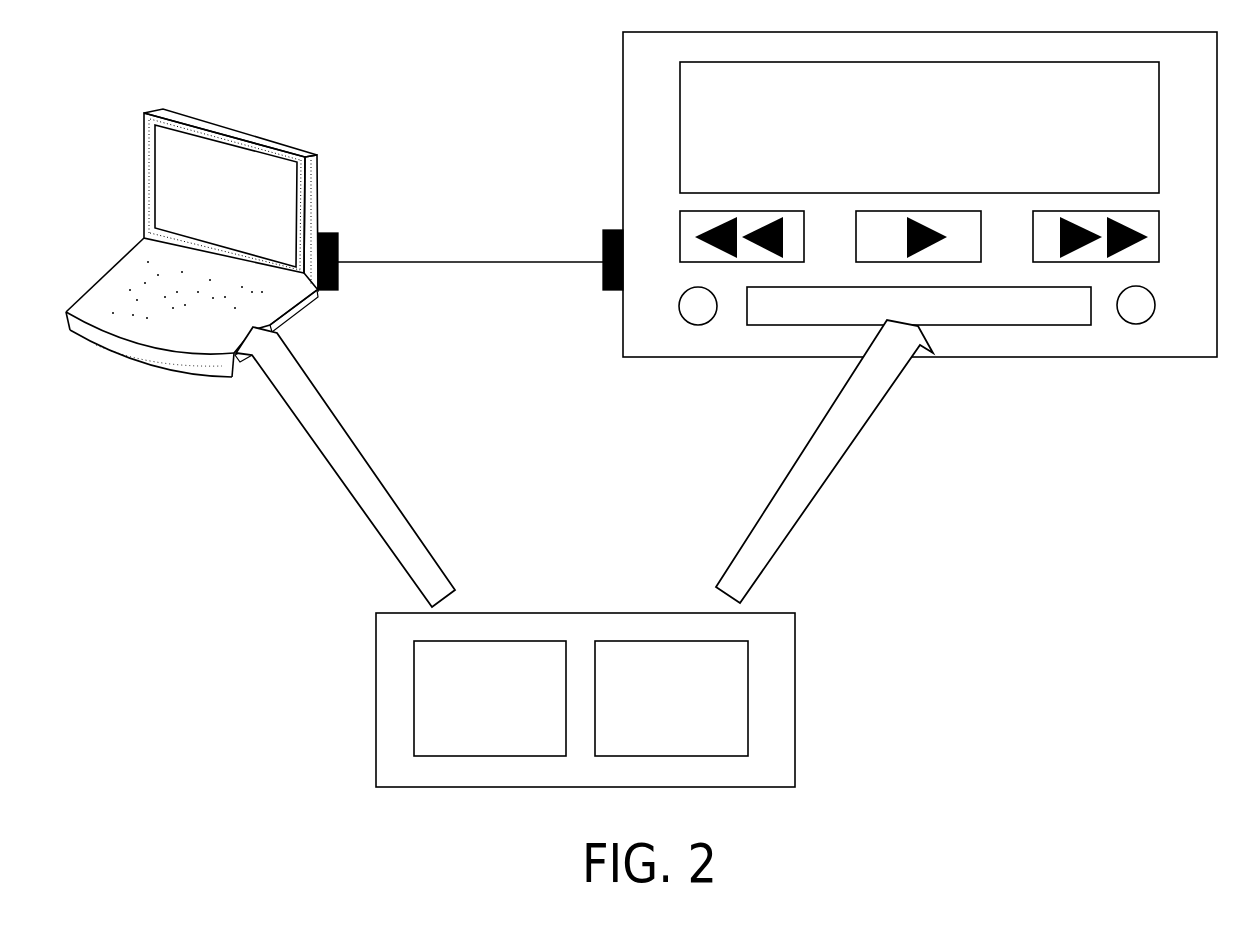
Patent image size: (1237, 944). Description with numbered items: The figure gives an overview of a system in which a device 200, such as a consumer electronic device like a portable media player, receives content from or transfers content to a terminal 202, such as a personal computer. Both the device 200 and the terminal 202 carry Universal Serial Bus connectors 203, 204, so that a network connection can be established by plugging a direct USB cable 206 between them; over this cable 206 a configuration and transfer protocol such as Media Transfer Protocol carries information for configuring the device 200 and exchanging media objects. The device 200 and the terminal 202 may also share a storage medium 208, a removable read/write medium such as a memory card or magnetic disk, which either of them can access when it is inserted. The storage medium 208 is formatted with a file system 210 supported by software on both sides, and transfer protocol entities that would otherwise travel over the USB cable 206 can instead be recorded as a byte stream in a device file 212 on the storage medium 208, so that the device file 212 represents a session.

The device 200 is at (849, 32).
The terminal 202 is at (277, 142).
The USB connector 203 is at (602, 238).
The USB connector 204 is at (339, 240).
The USB cable 206 is at (467, 264).
The storage medium 208 is at (623, 699).
The file system 210 is at (490, 698).
The device file 212 is at (671, 698).